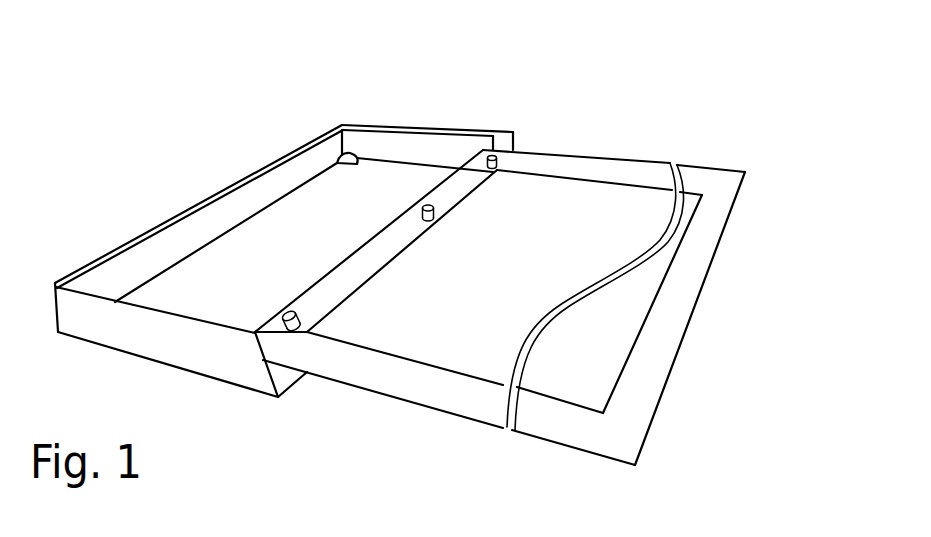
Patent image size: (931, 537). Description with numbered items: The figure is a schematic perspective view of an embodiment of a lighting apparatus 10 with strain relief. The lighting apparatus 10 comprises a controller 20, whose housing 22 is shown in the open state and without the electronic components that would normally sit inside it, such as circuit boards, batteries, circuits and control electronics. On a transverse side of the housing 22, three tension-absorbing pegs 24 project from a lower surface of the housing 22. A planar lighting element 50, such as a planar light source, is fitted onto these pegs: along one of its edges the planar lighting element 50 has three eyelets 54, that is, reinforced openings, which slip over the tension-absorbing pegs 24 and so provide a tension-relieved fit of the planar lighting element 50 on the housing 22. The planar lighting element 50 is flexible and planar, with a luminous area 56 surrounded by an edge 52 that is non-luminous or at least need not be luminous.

The lighting apparatus 10 is at (548, 98).
The controller 20 is at (284, 222).
The housing 22 is at (168, 348).
The tension-absorbing pegs 24 is at (493, 156).
The planar lighting element 50 is at (540, 257).
The edge 52 is at (707, 238).
The eyelets 54 is at (497, 165).
The luminous area 56 is at (637, 290).